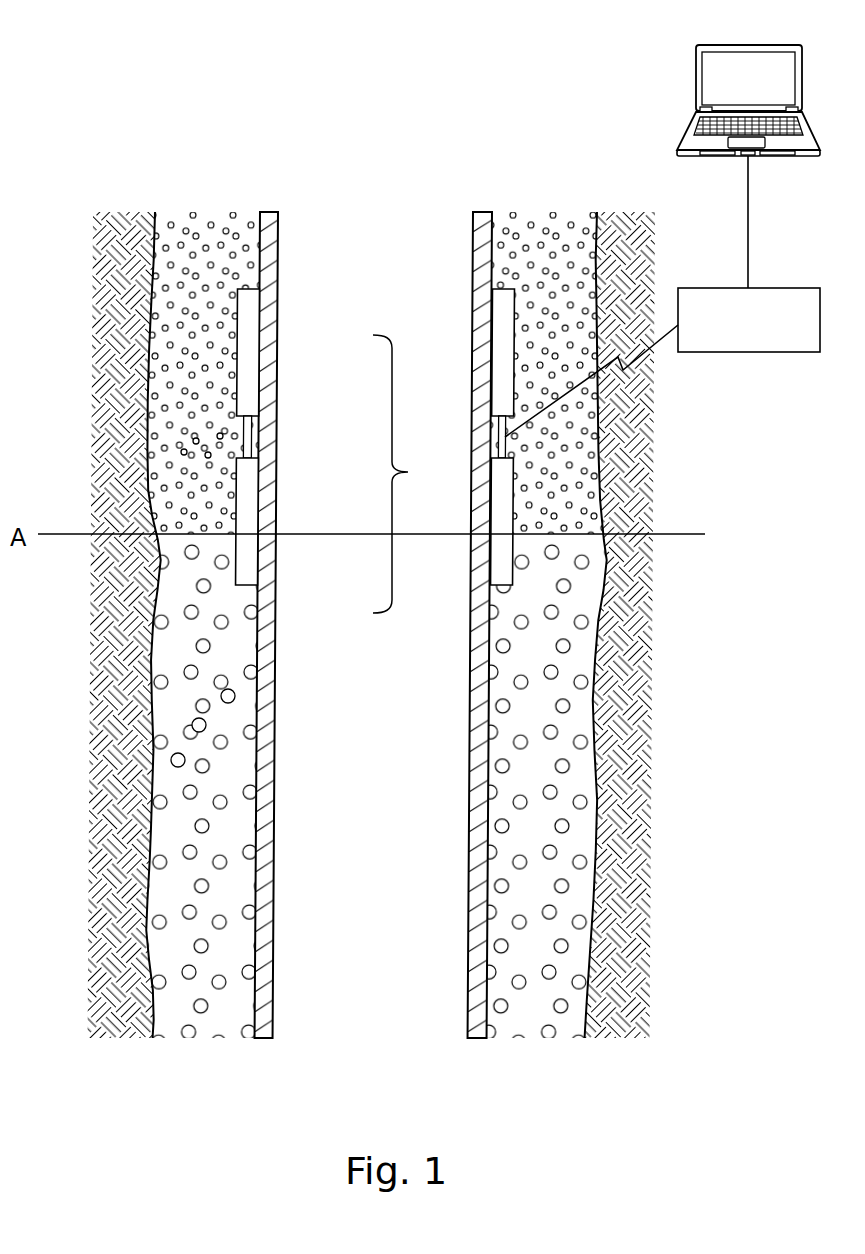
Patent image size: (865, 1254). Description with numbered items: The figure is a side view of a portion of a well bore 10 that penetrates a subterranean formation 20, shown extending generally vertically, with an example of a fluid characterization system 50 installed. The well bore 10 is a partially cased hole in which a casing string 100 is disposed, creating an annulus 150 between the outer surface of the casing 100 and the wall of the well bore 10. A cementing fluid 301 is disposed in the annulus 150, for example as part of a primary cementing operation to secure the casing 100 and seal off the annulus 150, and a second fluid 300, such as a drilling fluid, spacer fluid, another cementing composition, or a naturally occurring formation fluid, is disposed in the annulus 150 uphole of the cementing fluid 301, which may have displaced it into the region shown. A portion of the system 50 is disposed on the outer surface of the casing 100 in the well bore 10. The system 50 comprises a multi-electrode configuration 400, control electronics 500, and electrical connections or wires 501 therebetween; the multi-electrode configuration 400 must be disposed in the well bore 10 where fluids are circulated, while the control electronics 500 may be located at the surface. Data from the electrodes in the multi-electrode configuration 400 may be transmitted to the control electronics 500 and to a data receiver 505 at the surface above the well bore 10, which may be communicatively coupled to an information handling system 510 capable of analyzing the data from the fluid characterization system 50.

The well bore 10 is at (148, 492).
The formation 20 is at (110, 337).
The fluid characterization system 50 is at (408, 474).
The casing string 100 is at (280, 253).
The annulus 150 is at (205, 212).
The second fluid 300 is at (197, 437).
The cementing fluid 301 is at (199, 718).
The multi-electrode configuration 400 is at (262, 560).
The control electronics 500 is at (257, 367).
The electrical connections or wires 501 is at (252, 439).
The data receiver 505 is at (662, 362).
The information handling system 510 is at (694, 88).